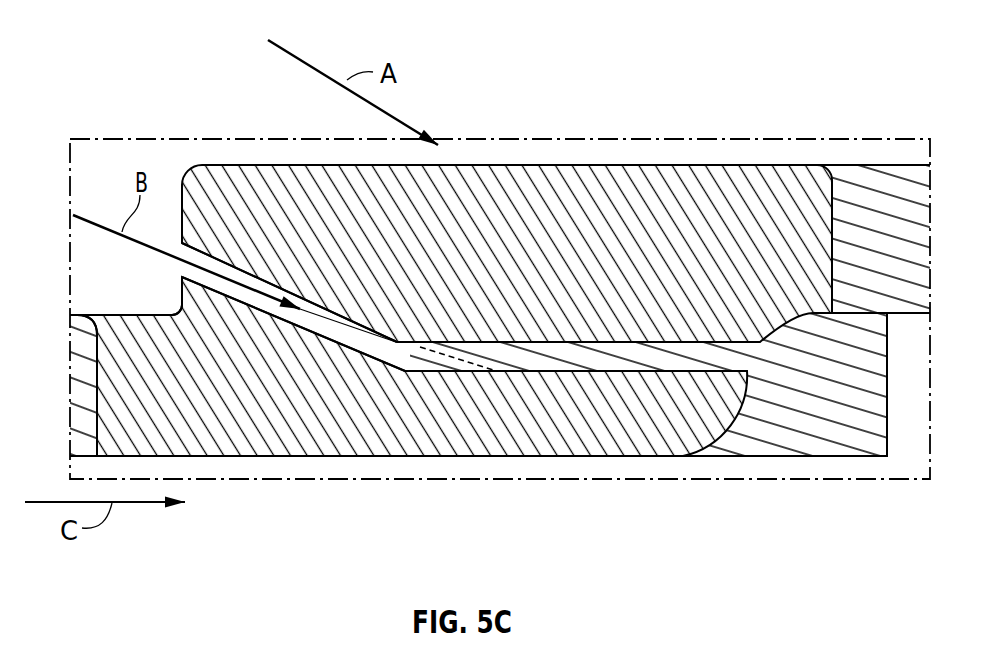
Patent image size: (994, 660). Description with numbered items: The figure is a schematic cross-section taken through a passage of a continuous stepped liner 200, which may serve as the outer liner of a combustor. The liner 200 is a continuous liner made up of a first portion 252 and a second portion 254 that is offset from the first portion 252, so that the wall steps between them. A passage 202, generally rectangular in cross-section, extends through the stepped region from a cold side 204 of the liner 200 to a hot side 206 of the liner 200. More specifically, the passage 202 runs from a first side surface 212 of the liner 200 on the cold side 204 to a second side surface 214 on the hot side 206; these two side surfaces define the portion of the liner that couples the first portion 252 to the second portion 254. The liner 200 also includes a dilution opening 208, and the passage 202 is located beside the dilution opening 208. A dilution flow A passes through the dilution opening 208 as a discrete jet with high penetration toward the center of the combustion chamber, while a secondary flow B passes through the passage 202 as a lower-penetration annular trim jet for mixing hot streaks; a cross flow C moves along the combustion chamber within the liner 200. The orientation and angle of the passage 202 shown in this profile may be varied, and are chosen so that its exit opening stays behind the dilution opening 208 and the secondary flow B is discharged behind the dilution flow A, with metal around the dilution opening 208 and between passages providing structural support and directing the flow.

The liner 200 is at (118, 32).
The passage 202 is at (427, 360).
The cold side 204 is at (191, 150).
The hot side 206 is at (612, 468).
The dilution opening 208 is at (550, 163).
The first side surface 212 is at (170, 303).
The second side surface 214 is at (737, 423).
The first portion 252 is at (78, 390).
The second portion 254 is at (863, 185).